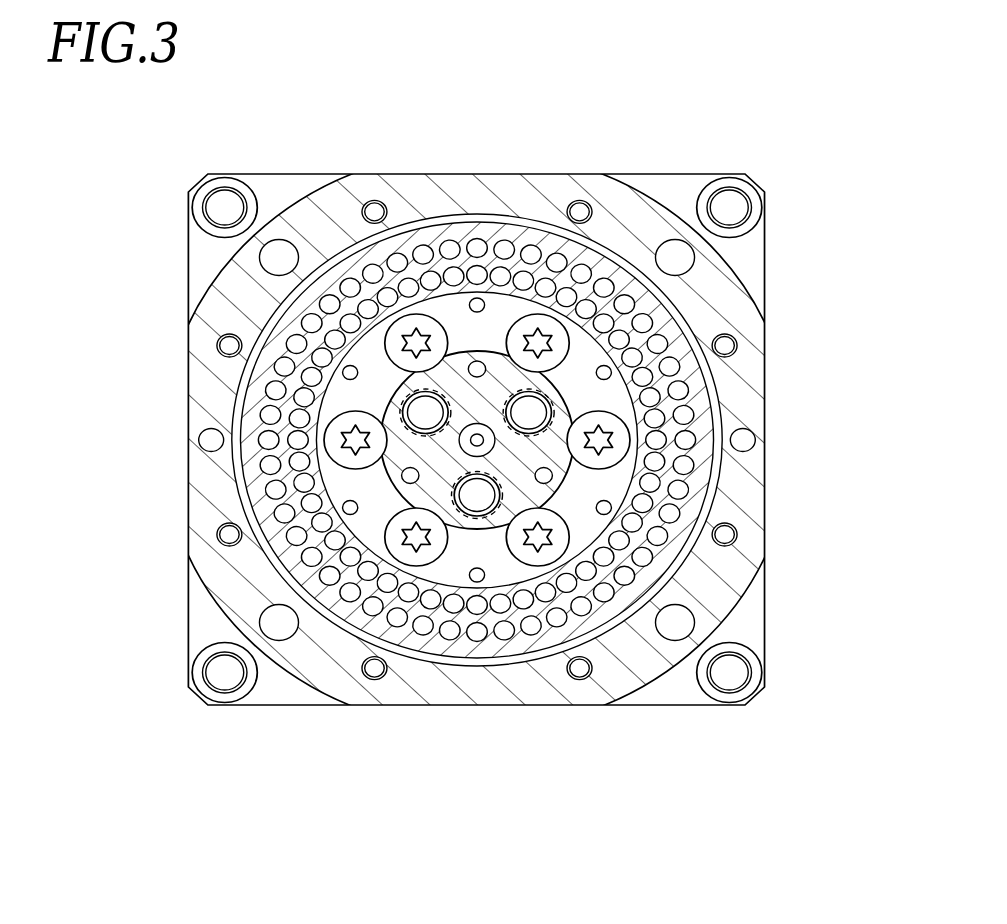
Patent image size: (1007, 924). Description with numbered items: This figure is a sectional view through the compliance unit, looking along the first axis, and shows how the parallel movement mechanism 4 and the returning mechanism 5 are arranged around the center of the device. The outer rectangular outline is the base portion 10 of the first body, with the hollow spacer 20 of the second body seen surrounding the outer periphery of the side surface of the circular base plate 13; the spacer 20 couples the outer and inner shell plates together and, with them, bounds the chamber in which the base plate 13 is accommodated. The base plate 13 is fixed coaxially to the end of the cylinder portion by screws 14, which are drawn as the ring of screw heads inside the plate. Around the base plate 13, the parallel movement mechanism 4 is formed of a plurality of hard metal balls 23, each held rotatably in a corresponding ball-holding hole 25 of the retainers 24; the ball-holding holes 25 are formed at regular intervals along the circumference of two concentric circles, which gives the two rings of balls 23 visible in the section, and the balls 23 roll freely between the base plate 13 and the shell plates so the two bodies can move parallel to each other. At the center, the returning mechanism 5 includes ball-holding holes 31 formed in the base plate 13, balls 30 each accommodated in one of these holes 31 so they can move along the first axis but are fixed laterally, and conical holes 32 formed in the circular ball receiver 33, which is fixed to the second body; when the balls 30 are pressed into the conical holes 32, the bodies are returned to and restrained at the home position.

The parallel movement mechanism 4 is at (549, 227).
The returning mechanism 5 is at (383, 487).
The base portion 10 is at (680, 195).
The base plate 13 is at (455, 308).
The screws 14 is at (420, 328).
The spacer 20 is at (730, 308).
The balls 23 is at (270, 440).
The retainers 24 is at (275, 322).
The ball-holding holes 25 is at (352, 285).
The balls 30 is at (524, 413).
The ball-holding holes 31 is at (400, 381).
The conical holes 32 is at (510, 405).
The ball receiver 33 is at (440, 490).